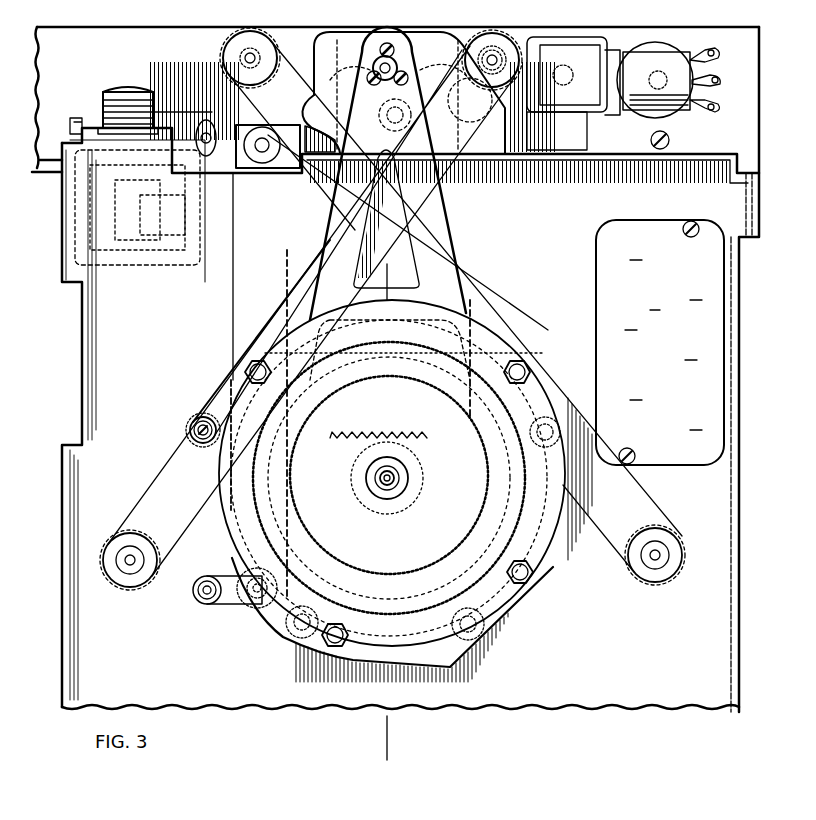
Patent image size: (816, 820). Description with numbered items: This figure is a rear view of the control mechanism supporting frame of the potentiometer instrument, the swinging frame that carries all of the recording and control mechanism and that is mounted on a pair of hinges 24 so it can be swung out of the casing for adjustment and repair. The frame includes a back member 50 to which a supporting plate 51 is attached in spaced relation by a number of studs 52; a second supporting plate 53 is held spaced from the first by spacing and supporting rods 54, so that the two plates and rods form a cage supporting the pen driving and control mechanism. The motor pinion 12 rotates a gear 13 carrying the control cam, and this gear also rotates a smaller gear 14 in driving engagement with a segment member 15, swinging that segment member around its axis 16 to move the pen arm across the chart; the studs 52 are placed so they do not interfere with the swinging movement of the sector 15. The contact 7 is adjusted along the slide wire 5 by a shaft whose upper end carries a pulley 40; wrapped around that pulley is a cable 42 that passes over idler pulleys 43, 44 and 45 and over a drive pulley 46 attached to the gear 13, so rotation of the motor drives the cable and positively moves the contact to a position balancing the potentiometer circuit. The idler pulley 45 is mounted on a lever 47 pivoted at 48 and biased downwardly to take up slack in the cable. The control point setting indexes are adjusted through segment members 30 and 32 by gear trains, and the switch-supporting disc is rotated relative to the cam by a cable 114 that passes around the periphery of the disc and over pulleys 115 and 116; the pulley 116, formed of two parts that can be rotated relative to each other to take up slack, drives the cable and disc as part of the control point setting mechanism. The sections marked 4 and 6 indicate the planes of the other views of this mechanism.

The section line 4- 4 is at (375, 286).
The slide wire 5 is at (108, 252).
The section line 6- 6 is at (215, 55).
The contact 7 is at (150, 252).
The pinion 12 is at (200, 415).
The gear 13 is at (240, 526).
The smaller gear 14 is at (410, 472).
The segment member 15 is at (445, 212).
The axis 16 is at (392, 68).
The hinges 24 is at (753, 237).
The segment member 30 is at (357, 32).
The segment member 32 is at (447, 40).
The pulley 40 is at (122, 90).
The cable 42 is at (230, 288).
The idler pulley 43 is at (212, 122).
The idler pulley 44 is at (267, 166).
The idler pulley 45 is at (255, 612).
The drive pulley 46 is at (310, 540).
The lever 47 is at (220, 603).
The pivot 48 is at (205, 590).
The back member 50 is at (556, 688).
The supporting plate 51 is at (470, 655).
The studs 52 is at (192, 430).
The second supporting plate 53 is at (492, 338).
The spacing and supporting rods 54 is at (248, 362).
The cable 114 is at (285, 315).
The pulley 115 is at (130, 562).
The pulley 116 is at (255, 30).